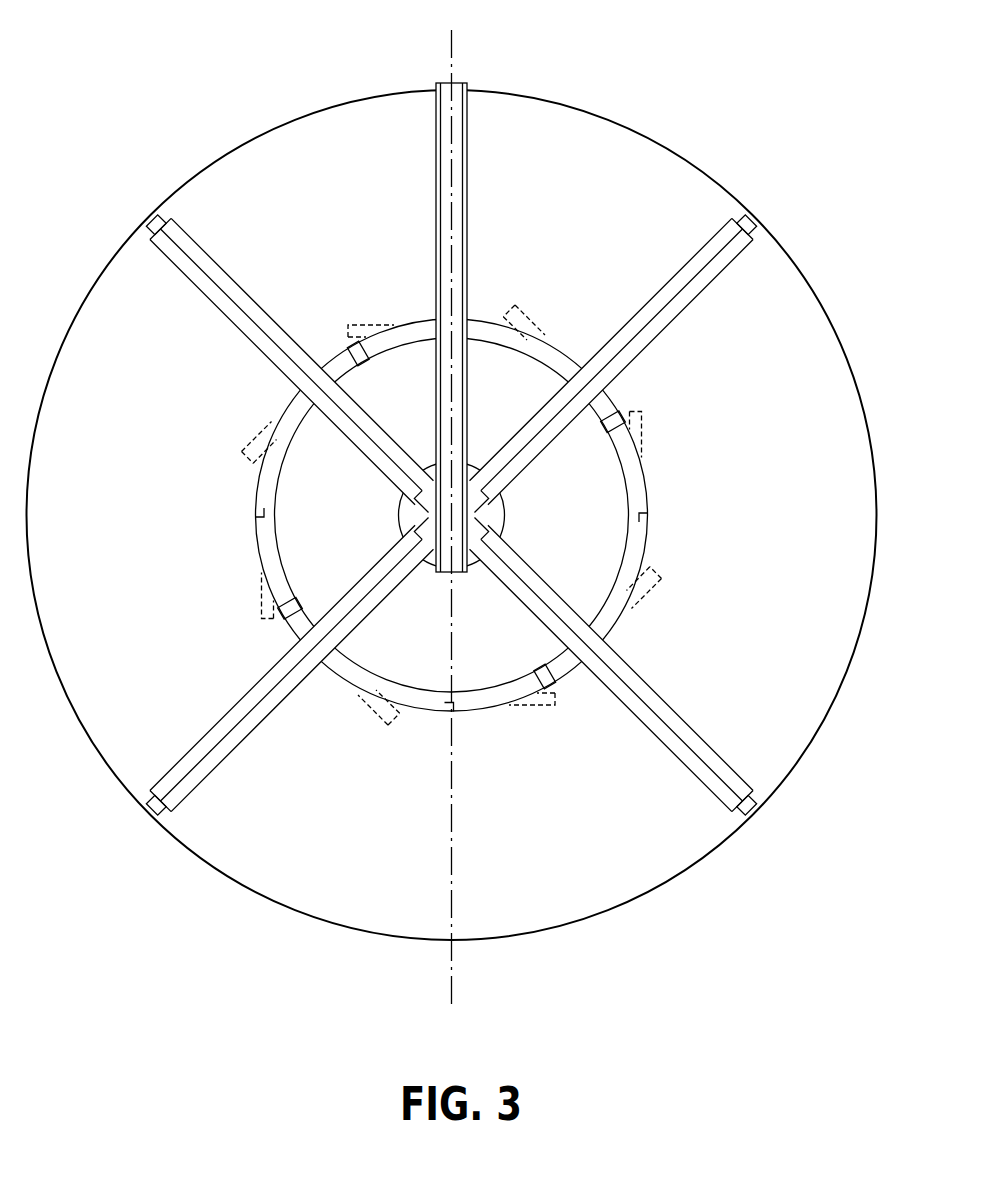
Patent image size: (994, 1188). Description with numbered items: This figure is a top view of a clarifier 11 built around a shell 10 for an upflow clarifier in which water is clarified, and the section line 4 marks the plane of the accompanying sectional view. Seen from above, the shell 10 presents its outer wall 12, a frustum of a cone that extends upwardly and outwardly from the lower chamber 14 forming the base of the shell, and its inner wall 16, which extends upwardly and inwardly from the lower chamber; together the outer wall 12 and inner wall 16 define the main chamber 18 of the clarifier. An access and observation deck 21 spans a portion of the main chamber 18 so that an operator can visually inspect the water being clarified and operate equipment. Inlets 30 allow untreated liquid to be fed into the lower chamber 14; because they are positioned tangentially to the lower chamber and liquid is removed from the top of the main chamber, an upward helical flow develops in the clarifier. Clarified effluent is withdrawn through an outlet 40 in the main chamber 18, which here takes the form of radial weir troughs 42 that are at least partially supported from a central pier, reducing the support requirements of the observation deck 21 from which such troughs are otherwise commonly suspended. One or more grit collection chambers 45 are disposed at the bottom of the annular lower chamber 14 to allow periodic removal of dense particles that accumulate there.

The section line 4- 4 is at (452, 30).
The shell 10 is at (815, 749).
The clarifier 11 is at (300, 921).
The outer wall 12 is at (122, 763).
The lower chamber 14 is at (208, 592).
The inner wall 16 is at (293, 488).
The main chamber 18 is at (774, 548).
The access and observation deck 21 is at (455, 116).
The inlets 30 is at (523, 321).
The outlet 40 is at (698, 760).
The radial weir troughs 42 is at (187, 259).
The grit collection chambers 45 is at (357, 348).